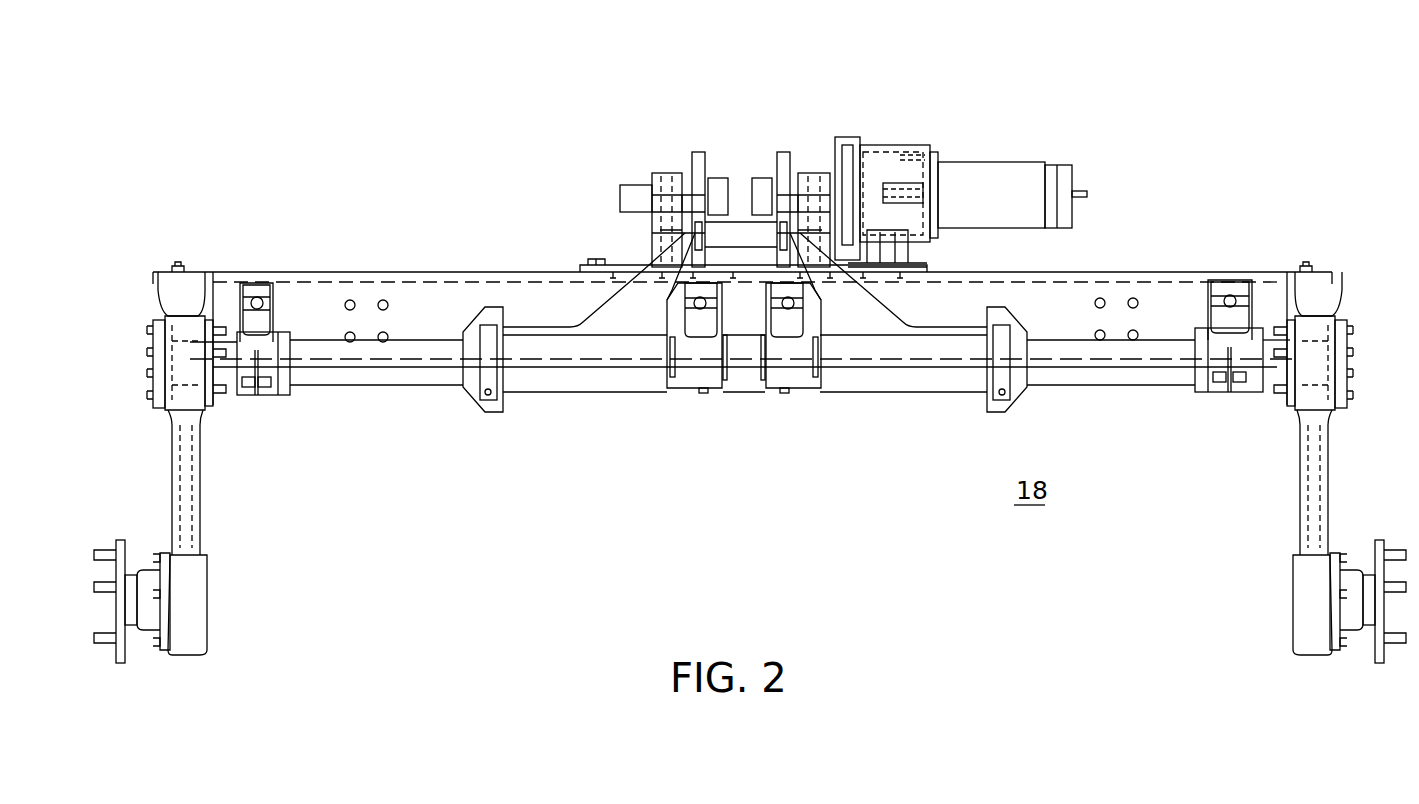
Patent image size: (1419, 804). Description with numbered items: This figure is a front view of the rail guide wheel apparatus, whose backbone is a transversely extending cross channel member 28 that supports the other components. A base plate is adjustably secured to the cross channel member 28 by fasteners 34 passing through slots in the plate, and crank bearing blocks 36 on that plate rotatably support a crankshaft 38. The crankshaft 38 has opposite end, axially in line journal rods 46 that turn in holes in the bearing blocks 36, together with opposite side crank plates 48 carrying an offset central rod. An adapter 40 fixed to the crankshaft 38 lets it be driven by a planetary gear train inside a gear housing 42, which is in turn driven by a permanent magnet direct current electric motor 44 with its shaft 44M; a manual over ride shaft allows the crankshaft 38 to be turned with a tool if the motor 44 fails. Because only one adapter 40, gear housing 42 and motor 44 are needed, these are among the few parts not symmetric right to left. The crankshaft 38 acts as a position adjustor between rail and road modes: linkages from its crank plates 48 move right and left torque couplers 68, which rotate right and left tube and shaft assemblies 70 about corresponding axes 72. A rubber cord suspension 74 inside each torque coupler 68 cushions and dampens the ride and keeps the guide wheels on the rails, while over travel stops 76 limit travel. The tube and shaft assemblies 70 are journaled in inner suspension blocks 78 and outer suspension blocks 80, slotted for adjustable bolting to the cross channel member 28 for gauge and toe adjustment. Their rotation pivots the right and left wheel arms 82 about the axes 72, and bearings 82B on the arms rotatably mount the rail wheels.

The cross channel member 28 is at (1168, 270).
The fasteners 34 is at (590, 262).
The crank bearing blocks 36 is at (798, 173).
The crankshaft 38 is at (733, 218).
The adapter 40 is at (842, 137).
The gear housing 42 is at (890, 143).
The permanent magnet direct current electric motor 44 is at (1045, 163).
The motor shaft 44M is at (1087, 192).
The journal rods 46 is at (630, 190).
The crank plates 48 is at (772, 152).
The torque couplers 68 is at (828, 393).
The tube and shaft assemblies 70 is at (352, 387).
The axes 72 is at (150, 352).
The rubber cord suspension 74 is at (882, 360).
The over travel stops 76 is at (1017, 392).
The inner suspension blocks 78 is at (762, 392).
The outer suspension blocks 80 is at (262, 395).
The wheel arms 82 is at (207, 517).
The bearings 82B is at (142, 627).